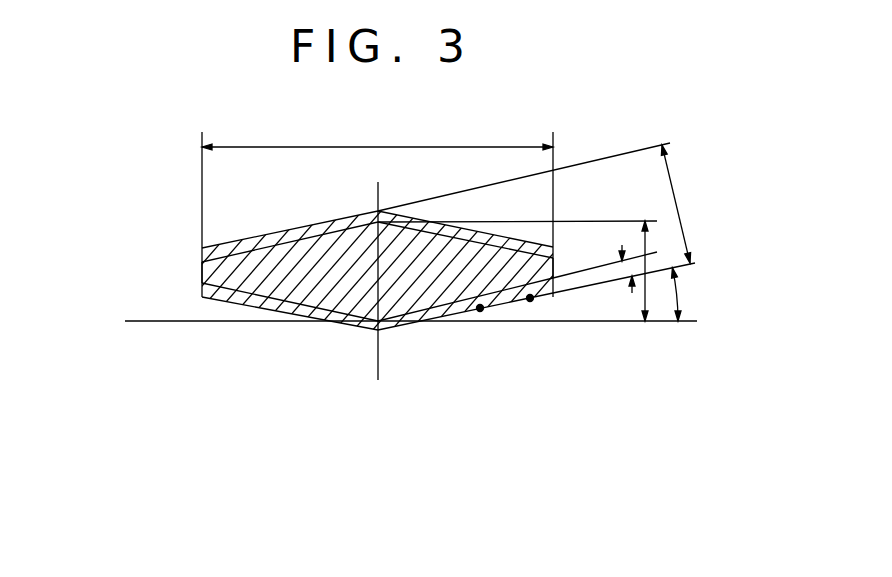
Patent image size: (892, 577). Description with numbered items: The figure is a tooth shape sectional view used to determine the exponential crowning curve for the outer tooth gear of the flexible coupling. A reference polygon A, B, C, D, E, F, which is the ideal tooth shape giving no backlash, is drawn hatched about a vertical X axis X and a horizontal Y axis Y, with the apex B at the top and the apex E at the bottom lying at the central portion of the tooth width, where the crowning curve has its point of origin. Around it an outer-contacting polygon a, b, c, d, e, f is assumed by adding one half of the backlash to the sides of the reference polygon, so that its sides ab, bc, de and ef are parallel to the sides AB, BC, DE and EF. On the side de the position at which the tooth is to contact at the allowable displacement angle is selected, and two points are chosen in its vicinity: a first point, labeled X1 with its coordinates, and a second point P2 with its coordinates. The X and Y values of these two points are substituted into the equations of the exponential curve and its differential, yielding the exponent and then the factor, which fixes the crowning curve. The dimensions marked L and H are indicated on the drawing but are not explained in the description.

The apex a of outer-contacting polygon a is at (202, 248).
The apex b of outer-contacting polygon b is at (379, 212).
The apex c of outer-contacting polygon c is at (554, 247).
The apex d of outer-contacting polygon d is at (554, 293).
The apex e of outer-contacting polygon e is at (380, 331).
The apex f of outer-contacting polygon f is at (202, 297).
The apex A of reference polygon A is at (202, 262).
The apex B of reference polygon B is at (376, 222).
The apex C of reference polygon C is at (554, 258).
The apex D of reference polygon D is at (554, 278).
The apex E of reference polygon E is at (376, 322).
The apex F of reference polygon F is at (202, 283).
The X coordinate axis X is at (377, 265).
The Y coordinate axis Y is at (398, 322).
The tooth length dimension L is at (377, 135).
The tooth height dimension H is at (668, 204).
The X coordinate of point P1 X1 is at (480, 312).
The point P2 is at (531, 302).